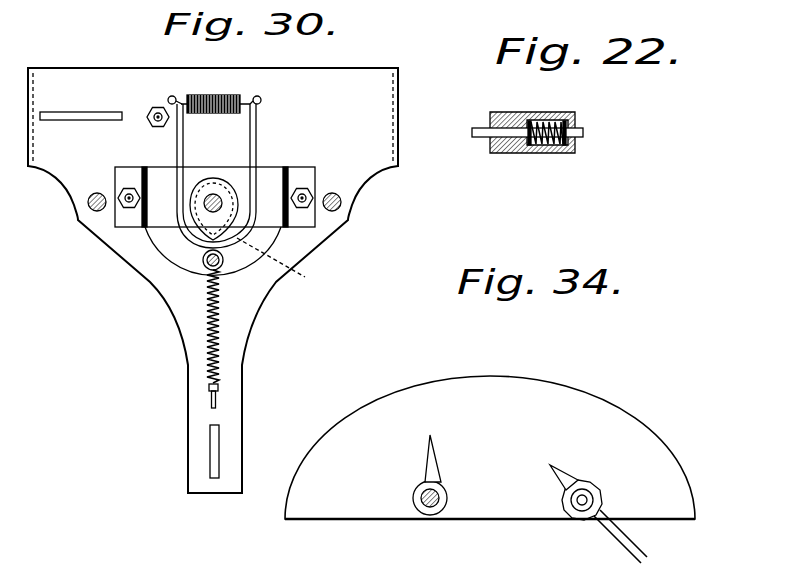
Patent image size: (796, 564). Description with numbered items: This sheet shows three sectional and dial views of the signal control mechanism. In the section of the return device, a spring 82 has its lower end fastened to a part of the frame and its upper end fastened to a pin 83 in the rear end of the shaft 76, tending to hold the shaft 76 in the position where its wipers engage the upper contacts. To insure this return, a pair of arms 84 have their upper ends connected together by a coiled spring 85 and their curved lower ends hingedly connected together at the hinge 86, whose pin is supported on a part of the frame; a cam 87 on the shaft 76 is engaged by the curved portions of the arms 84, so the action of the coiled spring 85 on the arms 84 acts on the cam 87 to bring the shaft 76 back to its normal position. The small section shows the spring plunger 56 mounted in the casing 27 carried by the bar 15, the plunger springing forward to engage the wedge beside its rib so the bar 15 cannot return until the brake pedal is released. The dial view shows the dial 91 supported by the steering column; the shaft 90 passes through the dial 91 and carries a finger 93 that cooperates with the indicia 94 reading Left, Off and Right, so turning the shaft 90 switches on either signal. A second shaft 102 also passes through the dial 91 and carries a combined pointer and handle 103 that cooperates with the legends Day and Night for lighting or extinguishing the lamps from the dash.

In FIG. 30, the coiled spring 85 is at (213, 95).
In FIG. 30, the arms 84 is at (183, 151).
In FIG. 30, the shaft 76 is at (219, 196).
In FIG. 30, the cam 87 is at (240, 226).
In FIG. 30, the pin 83 is at (286, 264).
In FIG. 30, the hinge 86 is at (222, 266).
In FIG. 30, the spring 82 is at (220, 356).
In FIG. 22, the bar 15 is at (511, 154).
In FIG. 22, the spring plunger 56 is at (487, 136).
In FIG. 22, the casing 27 is at (545, 113).
In FIG. 34, the dial 91 is at (538, 386).
In FIG. 34, the indicia 94 is at (399, 440).
In FIG. 34, the shaft 90 is at (435, 515).
In FIG. 34, the finger 93 is at (422, 470).
In FIG. 34, the shaft 102 is at (580, 506).
In FIG. 34, the combined pointer and handle 103 is at (647, 551).